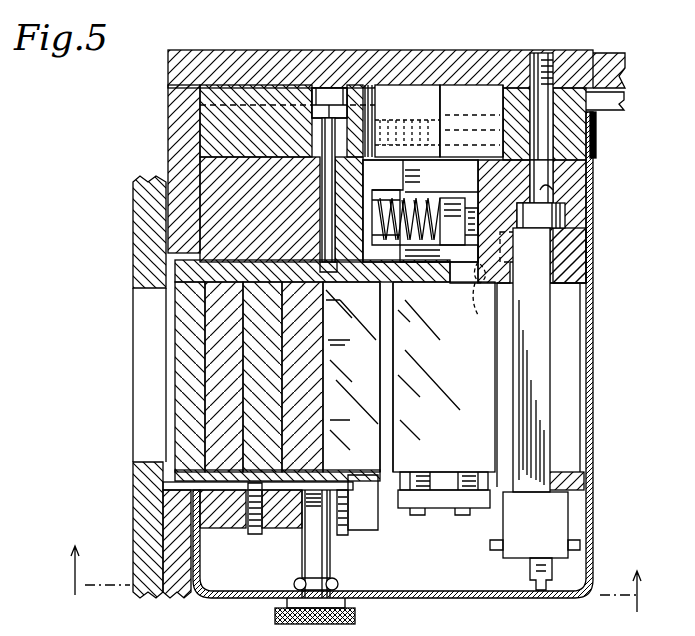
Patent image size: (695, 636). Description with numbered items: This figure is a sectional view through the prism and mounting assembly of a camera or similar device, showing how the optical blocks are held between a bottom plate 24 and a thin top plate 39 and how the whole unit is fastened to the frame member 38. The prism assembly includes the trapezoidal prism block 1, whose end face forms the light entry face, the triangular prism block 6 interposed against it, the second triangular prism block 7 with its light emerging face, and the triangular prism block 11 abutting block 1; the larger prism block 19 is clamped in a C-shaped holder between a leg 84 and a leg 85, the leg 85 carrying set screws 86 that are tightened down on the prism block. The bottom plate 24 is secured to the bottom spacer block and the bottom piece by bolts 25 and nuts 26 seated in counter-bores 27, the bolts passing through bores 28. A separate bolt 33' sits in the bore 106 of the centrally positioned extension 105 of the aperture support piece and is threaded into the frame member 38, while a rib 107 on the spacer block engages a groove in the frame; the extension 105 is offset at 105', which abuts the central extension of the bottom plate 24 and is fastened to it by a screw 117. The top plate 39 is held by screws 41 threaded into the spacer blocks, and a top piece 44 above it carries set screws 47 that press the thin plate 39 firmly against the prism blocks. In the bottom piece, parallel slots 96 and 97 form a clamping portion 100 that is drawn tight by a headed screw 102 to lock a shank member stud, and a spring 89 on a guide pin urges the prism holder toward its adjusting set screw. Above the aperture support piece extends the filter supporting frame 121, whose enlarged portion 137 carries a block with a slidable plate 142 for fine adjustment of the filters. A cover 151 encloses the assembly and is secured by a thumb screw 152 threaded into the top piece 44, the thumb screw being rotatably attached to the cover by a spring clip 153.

The prism block 1 is at (180, 383).
The triangularly shaped prism block 7 is at (324, 376).
The triangularly shaped prism block 11 is at (340, 432).
The prism block 19 is at (449, 399).
The bottom plate 24 is at (460, 283).
The bolt 25 is at (322, 208).
The nut 26 is at (336, 105).
The counter-bore 27 is at (325, 88).
The bore 28 is at (322, 131).
The bolt 33' is at (574, 215).
The frame member 38 is at (624, 72).
The top plate 39 is at (210, 478).
The screw 41 is at (163, 488).
The top piece 44 is at (283, 528).
The set screw 47 is at (250, 534).
The leg 84 is at (400, 255).
The leg 85 is at (407, 503).
The set screw 86 is at (425, 515).
The spring 89 is at (400, 192).
The slot 96 is at (452, 100).
The slot 97 is at (378, 100).
The clamping portion 100 is at (430, 88).
The headed screw 102 is at (597, 150).
The extension 105 is at (452, 206).
The offset portion 105' is at (571, 250).
The bore 106 is at (553, 188).
The rib 107 is at (612, 101).
The screw 117 is at (477, 300).
The supporting frame 121 is at (548, 408).
The enlarged portion 137 is at (560, 520).
The plate 142 is at (560, 575).
The cover 151 is at (455, 598).
The thumb screw 152 is at (356, 616).
The spring clip 153 is at (338, 582).
The triangularly shaped prism block 6 is at (354, 563).